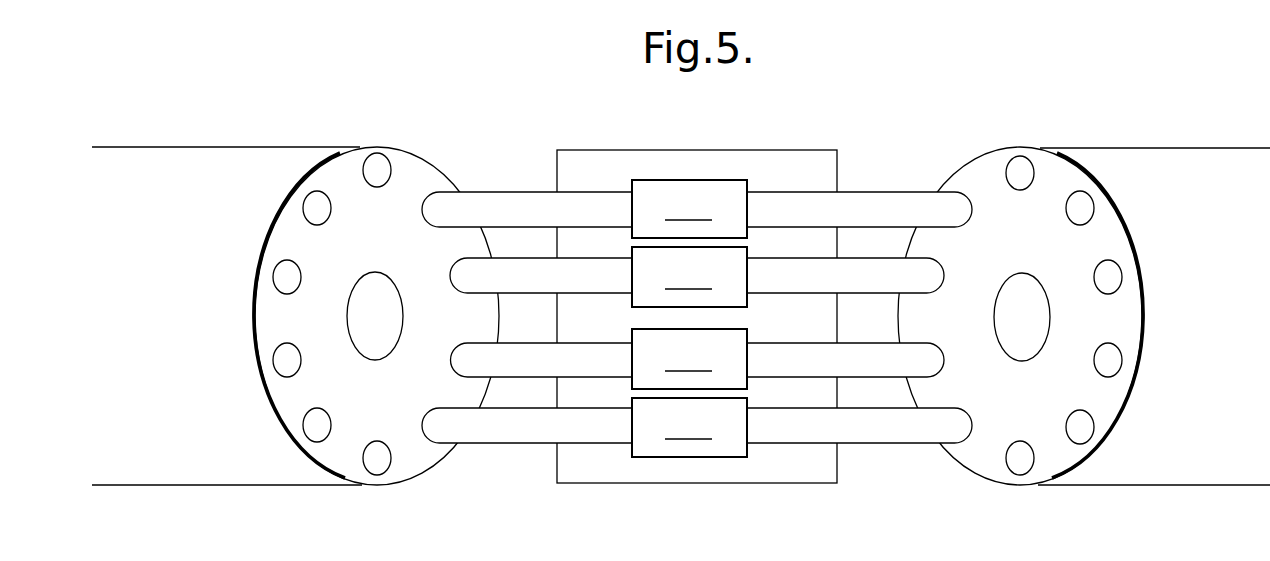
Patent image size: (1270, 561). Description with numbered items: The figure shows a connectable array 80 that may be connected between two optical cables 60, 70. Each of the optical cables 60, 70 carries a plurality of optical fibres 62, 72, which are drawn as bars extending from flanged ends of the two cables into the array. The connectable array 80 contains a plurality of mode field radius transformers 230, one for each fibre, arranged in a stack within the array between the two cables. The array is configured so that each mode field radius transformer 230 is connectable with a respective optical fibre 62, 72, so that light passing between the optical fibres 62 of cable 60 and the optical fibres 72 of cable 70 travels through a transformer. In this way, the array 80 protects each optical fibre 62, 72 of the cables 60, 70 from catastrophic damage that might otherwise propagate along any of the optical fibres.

The optical cable 60 is at (198, 147).
The optical cable 70 is at (1182, 148).
The optical fibre 62 is at (497, 191).
The optical fibre 72 is at (890, 192).
The connectable array 80 is at (758, 150).
The mode field radius transformer 230 is at (689, 318).